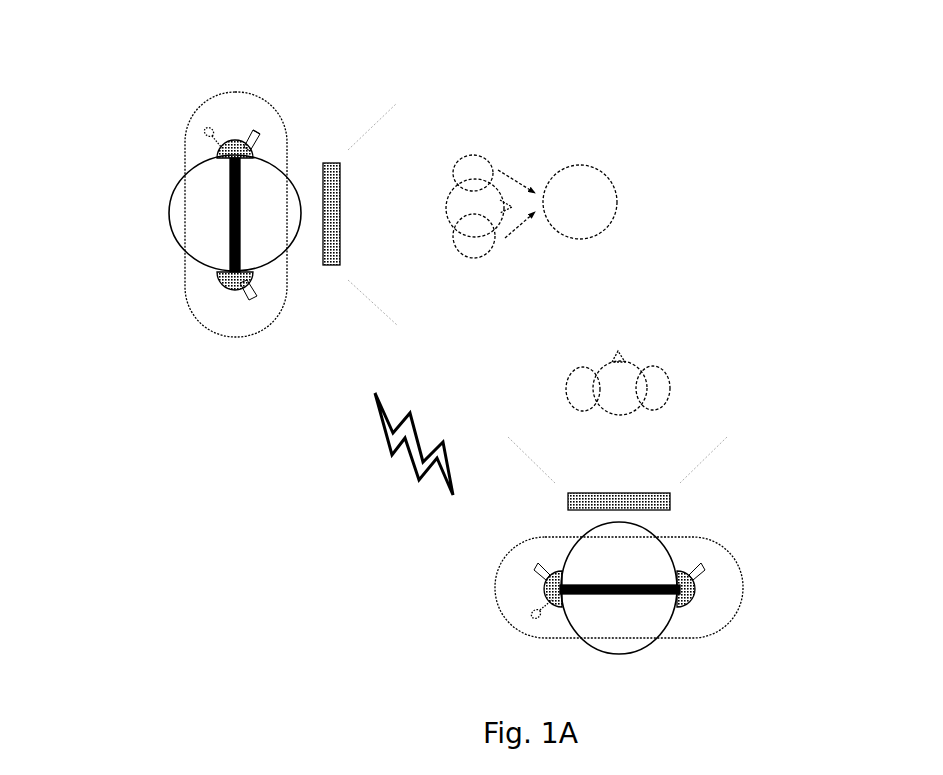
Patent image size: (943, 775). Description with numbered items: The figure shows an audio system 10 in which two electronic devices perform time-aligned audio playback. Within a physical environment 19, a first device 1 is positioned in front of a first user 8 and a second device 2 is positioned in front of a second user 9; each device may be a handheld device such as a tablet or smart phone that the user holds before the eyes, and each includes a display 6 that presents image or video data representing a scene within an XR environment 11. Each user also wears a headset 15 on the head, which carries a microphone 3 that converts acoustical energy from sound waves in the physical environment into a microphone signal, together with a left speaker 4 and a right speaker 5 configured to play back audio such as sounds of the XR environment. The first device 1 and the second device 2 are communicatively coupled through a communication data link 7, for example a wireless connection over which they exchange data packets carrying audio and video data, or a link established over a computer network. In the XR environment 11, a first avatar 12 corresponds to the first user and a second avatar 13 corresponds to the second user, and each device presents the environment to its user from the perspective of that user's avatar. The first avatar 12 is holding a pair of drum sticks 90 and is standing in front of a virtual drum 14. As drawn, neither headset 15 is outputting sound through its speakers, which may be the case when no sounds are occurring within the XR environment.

The first electronic device 1 is at (338, 128).
The second electronic device 2 is at (703, 513).
The microphone 3 is at (205, 130).
The left speaker 4 is at (257, 138).
The right speaker 5 is at (243, 290).
The display 6 is at (322, 253).
The communication data link 7 is at (331, 488).
The first user 8 is at (182, 250).
The second user 9 is at (590, 643).
The audio system 10 is at (160, 102).
The XR environment 11 is at (836, 180).
The first avatar 12 is at (470, 272).
The second avatar 13 is at (687, 387).
The virtual drum 14 is at (612, 158).
The headset 15 is at (205, 218).
The physical environment 19 is at (172, 656).
The drum sticks 90 is at (523, 153).